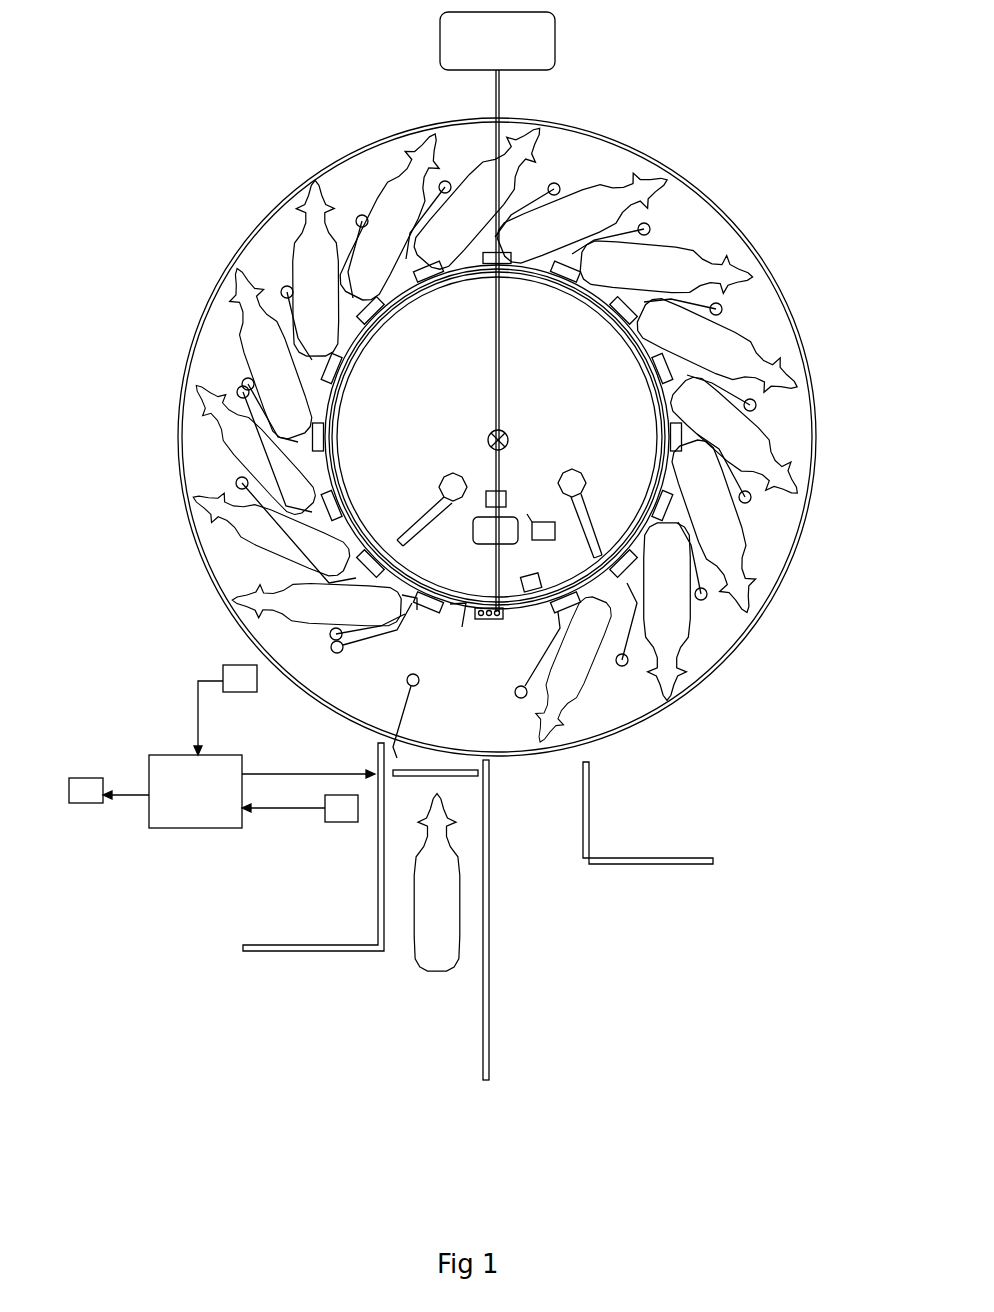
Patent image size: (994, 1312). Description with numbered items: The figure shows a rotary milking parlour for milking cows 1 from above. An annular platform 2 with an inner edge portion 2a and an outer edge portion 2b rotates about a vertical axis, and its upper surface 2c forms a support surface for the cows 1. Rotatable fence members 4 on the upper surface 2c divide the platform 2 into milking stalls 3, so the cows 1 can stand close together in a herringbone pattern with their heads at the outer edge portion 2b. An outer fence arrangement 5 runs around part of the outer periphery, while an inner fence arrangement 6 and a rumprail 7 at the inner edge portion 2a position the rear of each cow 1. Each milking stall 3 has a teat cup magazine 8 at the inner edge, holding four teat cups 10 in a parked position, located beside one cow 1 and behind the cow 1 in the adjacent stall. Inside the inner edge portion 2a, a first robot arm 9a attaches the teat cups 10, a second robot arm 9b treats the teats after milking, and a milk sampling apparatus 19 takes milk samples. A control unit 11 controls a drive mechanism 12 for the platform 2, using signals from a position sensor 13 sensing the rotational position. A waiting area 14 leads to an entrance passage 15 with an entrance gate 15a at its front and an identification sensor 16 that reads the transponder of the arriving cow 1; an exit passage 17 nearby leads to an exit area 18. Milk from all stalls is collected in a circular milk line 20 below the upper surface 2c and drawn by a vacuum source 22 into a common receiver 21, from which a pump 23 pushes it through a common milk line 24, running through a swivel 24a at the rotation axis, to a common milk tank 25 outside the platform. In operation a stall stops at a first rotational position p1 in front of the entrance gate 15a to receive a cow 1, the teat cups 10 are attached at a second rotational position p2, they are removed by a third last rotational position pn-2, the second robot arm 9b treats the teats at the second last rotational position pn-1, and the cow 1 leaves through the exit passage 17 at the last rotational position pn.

The cow 1 is at (430, 907).
The annular platform 2 is at (698, 220).
The inner edge portion 2a is at (590, 297).
The outer edge portion 2b is at (788, 308).
The upper surface 2c is at (275, 248).
The milking stall 3 is at (775, 500).
The rotatable fence member 4 is at (372, 642).
The outer fence arrangement 5 is at (816, 364).
The inner fence arrangement 6 is at (457, 624).
The rumprail 7 is at (415, 612).
The teat cup magazine 8 is at (417, 273).
The first robot arm 9a is at (433, 508).
The second robot arm 9b is at (582, 517).
The teat cup 10 is at (490, 620).
The control unit 11 is at (174, 795).
The drive mechanism 12 is at (86, 797).
The position sensor 13 is at (254, 690).
The waiting area 14 is at (342, 1032).
The entrance passage 15 is at (400, 840).
The entrance gate 15a is at (450, 760).
The identification sensor 16 is at (331, 812).
The exit passage 17 is at (548, 805).
The exit area 18 is at (617, 967).
The milk sampling apparatus 19 is at (535, 580).
The circular milk line 20 is at (647, 340).
The common receiver 21 is at (487, 528).
The vacuum source 22 is at (543, 530).
The pump 23 is at (496, 499).
The common milk line 24 is at (494, 101).
The swivel 24a is at (492, 428).
The common milk tank 25 is at (462, 45).
The first rotational position p1 is at (383, 687).
The second rotational position p2 is at (280, 632).
The last rotational position pn is at (590, 720).
The second last rotational position pn-1 is at (687, 652).
The third last rotational position pn-2 is at (757, 562).